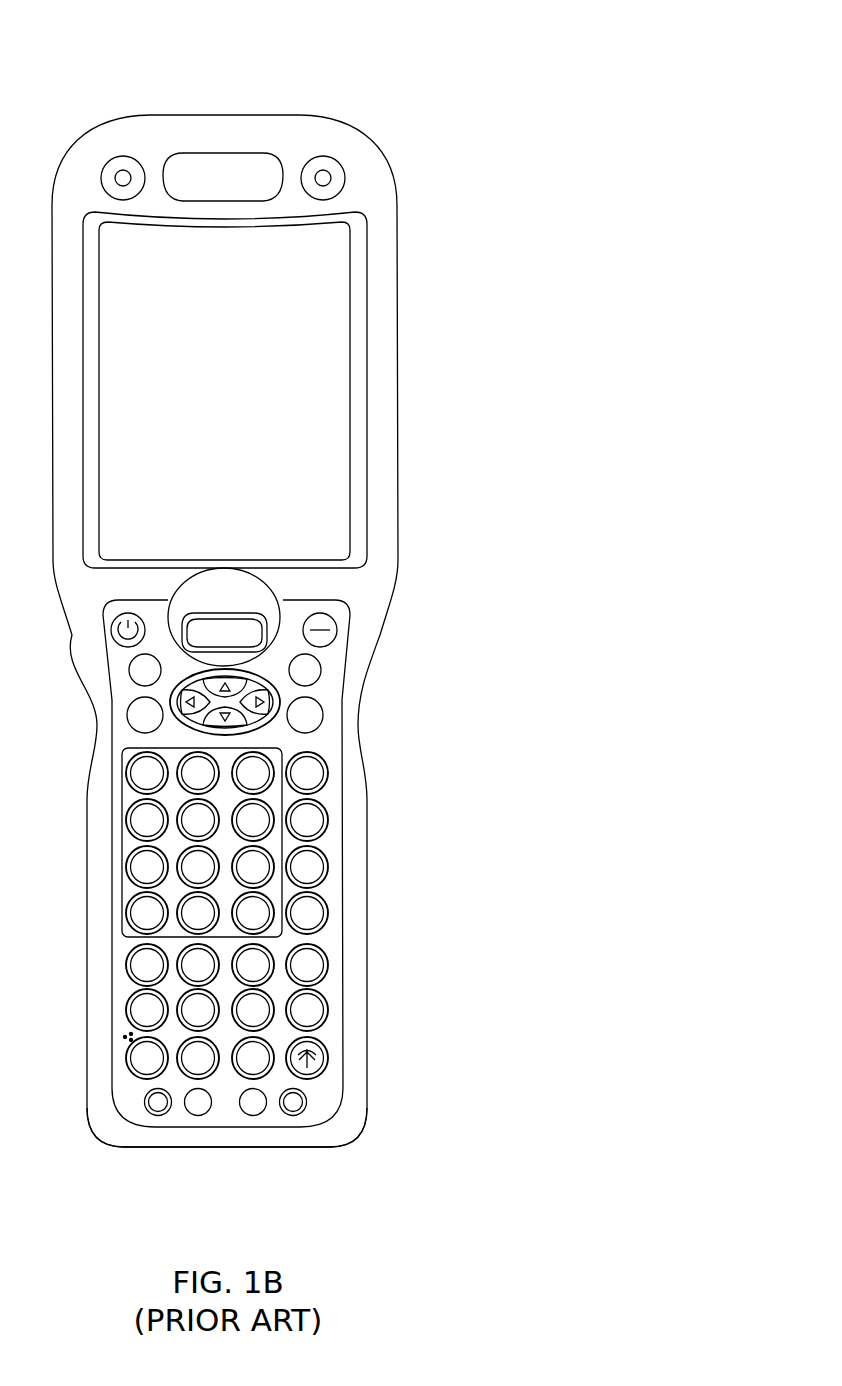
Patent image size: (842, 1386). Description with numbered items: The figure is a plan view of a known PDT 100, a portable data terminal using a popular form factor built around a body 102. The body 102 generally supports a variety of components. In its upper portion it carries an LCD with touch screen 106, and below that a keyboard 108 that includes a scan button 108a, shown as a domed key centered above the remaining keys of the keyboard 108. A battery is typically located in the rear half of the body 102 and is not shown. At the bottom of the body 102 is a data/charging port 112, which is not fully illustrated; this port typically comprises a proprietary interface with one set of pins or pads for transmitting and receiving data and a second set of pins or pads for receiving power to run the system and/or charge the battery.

The PDT 100 is at (384, 79).
The body 102 is at (398, 328).
The LCD with touch screen 106 is at (200, 381).
The keyboard 108 is at (328, 743).
The scan button 108a is at (265, 606).
The data/charging port 112 is at (243, 1147).